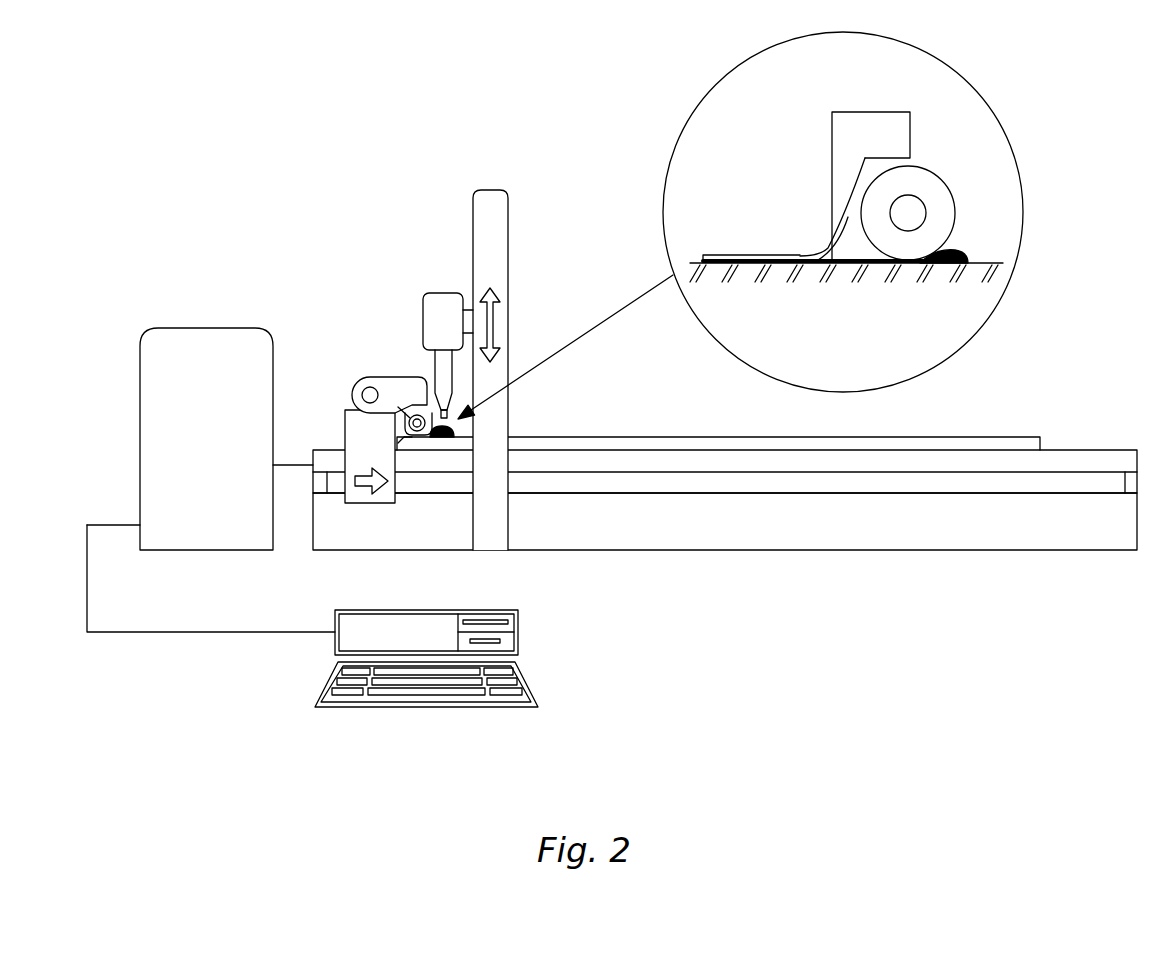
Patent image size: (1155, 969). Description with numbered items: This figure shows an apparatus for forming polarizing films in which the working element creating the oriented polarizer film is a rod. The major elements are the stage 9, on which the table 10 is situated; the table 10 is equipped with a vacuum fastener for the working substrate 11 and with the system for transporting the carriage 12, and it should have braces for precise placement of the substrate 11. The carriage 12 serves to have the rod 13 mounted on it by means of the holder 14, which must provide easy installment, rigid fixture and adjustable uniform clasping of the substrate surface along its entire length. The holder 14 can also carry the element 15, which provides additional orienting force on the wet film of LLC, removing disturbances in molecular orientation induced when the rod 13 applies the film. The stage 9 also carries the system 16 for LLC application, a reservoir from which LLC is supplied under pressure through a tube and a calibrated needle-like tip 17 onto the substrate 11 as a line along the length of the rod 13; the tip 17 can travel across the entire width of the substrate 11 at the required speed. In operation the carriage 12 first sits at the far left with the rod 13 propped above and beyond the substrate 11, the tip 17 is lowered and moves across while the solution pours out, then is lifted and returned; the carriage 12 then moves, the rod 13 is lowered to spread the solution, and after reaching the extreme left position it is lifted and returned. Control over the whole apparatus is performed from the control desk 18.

The stage 9 is at (947, 523).
The table 10 is at (1063, 463).
The substrate 11 is at (947, 442).
The carriage 12 is at (360, 432).
The rod 13 is at (937, 215).
The holder 14 is at (400, 396).
The element 15 is at (742, 255).
The system for LLC application 16 is at (440, 320).
The needle-like tip 17 is at (445, 413).
The control desk 18 is at (453, 658).